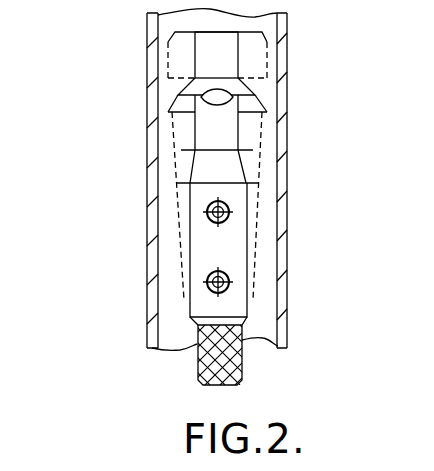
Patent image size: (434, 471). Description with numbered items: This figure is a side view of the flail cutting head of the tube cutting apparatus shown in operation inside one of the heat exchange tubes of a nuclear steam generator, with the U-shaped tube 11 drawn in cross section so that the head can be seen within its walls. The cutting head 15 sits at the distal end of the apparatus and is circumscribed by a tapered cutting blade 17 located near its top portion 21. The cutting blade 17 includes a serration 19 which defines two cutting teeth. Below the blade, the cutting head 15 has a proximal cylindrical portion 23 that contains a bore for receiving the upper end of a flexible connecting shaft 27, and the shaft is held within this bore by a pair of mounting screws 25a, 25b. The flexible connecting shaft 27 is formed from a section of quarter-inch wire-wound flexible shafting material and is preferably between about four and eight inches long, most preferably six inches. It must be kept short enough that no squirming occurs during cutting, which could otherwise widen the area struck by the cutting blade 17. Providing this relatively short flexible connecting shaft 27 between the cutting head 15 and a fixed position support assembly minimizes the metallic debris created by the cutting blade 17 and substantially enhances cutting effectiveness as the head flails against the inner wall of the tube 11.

The U-shaped tube 11 is at (148, 258).
The cutting head 15 is at (159, 178).
The tapered cutting blade 17 is at (257, 95).
The serration 19 is at (208, 97).
The top portion 21 is at (203, 57).
The proximal cylindrical portion 23 is at (198, 293).
The mounting screw 25a is at (230, 211).
The mounting screw 25b is at (230, 283).
The flexible connecting shaft 27 is at (242, 363).